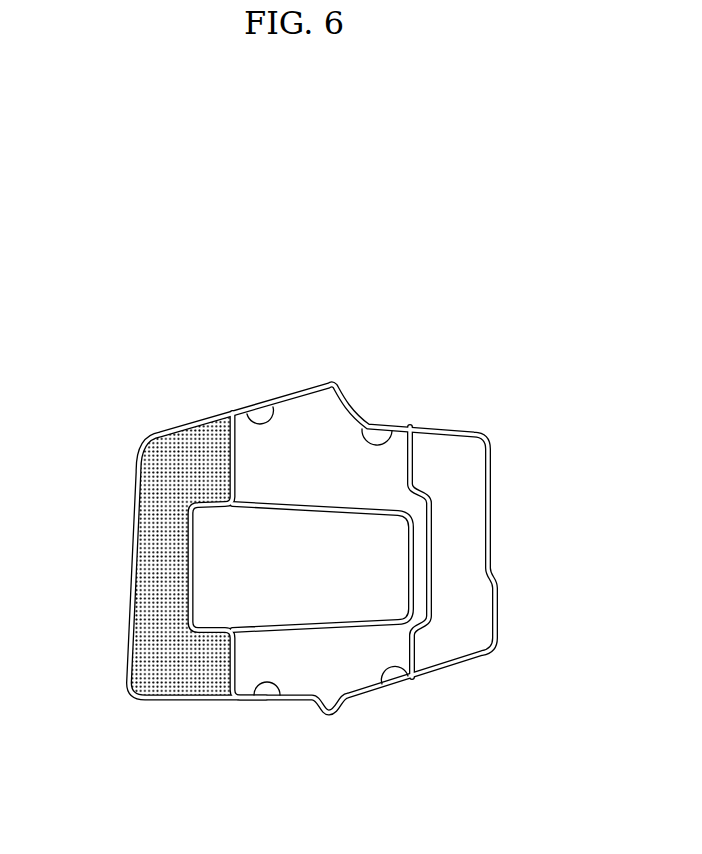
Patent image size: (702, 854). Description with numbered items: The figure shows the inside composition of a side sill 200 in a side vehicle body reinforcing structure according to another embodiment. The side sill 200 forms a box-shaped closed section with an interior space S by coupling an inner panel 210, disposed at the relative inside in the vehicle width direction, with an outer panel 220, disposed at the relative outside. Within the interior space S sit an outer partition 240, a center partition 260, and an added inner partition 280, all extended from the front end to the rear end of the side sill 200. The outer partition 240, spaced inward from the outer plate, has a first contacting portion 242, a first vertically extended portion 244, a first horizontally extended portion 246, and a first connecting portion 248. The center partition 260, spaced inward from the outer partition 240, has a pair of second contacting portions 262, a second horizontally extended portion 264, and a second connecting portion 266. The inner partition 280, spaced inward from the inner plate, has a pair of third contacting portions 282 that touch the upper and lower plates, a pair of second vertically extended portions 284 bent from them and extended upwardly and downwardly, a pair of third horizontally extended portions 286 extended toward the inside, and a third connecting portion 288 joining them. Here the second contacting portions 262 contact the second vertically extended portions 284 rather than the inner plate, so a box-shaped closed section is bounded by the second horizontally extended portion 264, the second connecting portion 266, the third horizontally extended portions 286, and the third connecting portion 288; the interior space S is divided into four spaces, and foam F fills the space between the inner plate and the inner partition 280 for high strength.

The side sill 200 is at (435, 365).
The inner panel 210 is at (204, 415).
The outer panel 220 is at (444, 424).
The outer partition 240 is at (444, 527).
The first contacting portion 242 is at (364, 427).
The first vertically extended portion 244 is at (417, 460).
The first horizontally extended portion 246 is at (421, 493).
The first connecting portion 248 is at (434, 547).
The center partition 260 is at (316, 640).
The second contacting portion 262 is at (236, 470).
The second horizontally extended portion 264 is at (333, 500).
The second connecting portion 266 is at (415, 589).
The inner partition 280 is at (176, 550).
The third contacting portion 282 is at (271, 413).
The second vertically extended portion 284 is at (200, 450).
The third horizontally extended portion 286 is at (203, 501).
The third connecting portion 288 is at (165, 579).
The foam F is at (466, 506).
The interior space S is at (330, 567).